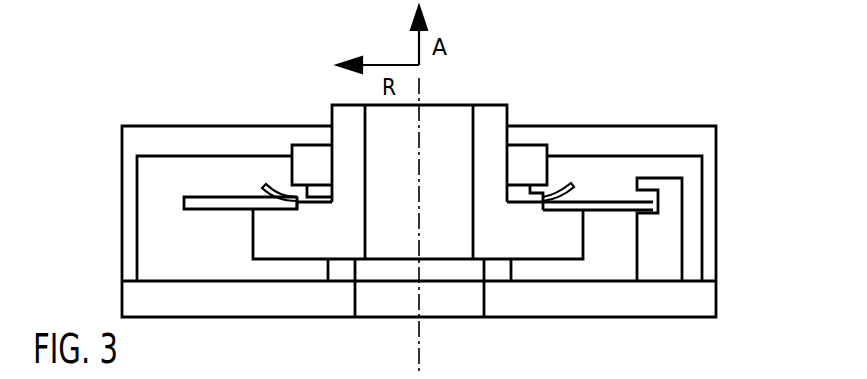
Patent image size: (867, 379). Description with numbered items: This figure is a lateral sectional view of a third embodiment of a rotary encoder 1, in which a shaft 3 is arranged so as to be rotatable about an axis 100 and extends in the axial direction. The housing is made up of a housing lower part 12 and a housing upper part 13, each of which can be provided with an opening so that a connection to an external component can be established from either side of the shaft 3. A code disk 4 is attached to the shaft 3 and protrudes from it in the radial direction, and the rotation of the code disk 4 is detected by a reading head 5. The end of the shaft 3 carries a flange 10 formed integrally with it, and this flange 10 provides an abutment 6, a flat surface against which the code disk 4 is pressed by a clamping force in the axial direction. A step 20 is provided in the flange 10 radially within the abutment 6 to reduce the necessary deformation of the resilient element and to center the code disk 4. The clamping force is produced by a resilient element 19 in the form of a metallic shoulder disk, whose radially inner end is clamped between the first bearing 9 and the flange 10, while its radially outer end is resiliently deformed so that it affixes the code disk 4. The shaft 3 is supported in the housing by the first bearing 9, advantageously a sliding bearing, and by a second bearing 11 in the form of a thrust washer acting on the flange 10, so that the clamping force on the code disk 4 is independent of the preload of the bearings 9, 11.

The rotary encoder 1 is at (647, 46).
The shaft 3 is at (490, 112).
The code disk 4 is at (601, 200).
The reading head 5 is at (682, 243).
The abutment 6 is at (578, 210).
The first bearing 9 is at (538, 157).
The flange 10 is at (583, 242).
The second bearing 11 is at (502, 272).
The housing lower part 12 is at (548, 307).
The housing upper part 13 is at (697, 132).
The resilient element 19 is at (520, 192).
The step 20 is at (538, 206).
The axis 100 is at (398, 225).